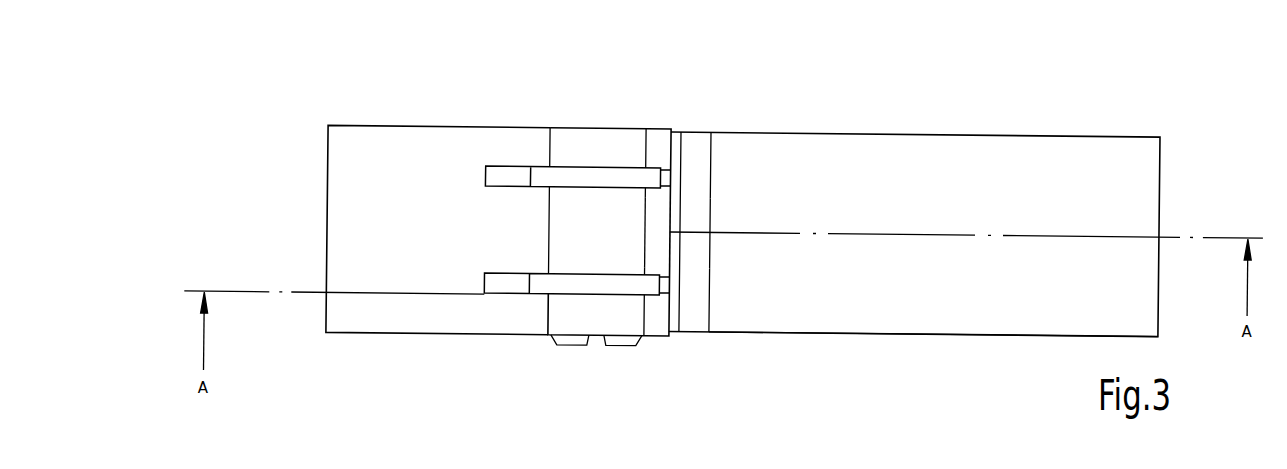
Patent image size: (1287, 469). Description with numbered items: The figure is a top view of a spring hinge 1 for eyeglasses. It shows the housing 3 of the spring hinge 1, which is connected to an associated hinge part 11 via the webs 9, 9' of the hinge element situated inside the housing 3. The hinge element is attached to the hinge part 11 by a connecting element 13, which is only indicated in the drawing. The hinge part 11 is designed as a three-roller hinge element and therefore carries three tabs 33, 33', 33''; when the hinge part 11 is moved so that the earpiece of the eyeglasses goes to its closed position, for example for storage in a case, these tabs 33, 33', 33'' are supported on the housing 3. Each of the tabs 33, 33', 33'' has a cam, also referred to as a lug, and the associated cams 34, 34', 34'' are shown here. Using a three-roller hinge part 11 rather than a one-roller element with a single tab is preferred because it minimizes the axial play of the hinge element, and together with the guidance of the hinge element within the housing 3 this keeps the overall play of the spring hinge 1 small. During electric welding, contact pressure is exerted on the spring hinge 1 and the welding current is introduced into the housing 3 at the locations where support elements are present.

The spring hinge 1 is at (924, 120).
The housing 3 is at (986, 310).
The web 9 is at (577, 112).
The web 9' is at (535, 368).
The hinge part 11 is at (373, 193).
The connecting element 13 is at (576, 343).
The tab 33 is at (610, 158).
The tab 33' is at (695, 155).
The tab 33'' is at (631, 343).
The cam 34 is at (687, 127).
The cam 34' is at (730, 272).
The cam 34'' is at (765, 347).